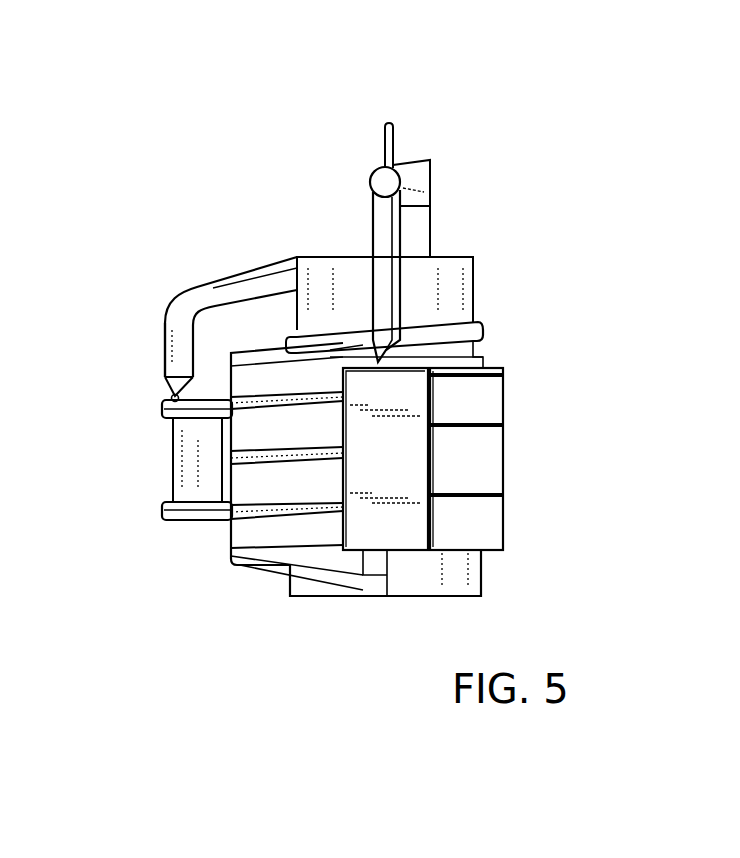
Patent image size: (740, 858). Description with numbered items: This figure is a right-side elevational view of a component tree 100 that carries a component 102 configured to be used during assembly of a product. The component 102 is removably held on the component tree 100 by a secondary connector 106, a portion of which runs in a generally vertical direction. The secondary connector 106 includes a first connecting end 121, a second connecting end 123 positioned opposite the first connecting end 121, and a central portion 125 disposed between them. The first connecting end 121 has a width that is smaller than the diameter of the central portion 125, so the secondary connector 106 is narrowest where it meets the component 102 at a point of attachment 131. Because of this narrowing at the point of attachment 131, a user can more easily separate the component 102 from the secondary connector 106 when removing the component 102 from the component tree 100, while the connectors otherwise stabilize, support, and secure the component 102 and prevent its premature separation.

The component tree 100 is at (574, 80).
The component 102 is at (173, 487).
The secondary connector 106 is at (165, 323).
The first connecting end 121 is at (167, 377).
The second connecting end 123 is at (372, 245).
The central portion 125 is at (212, 281).
The point of attachment 131 is at (171, 397).